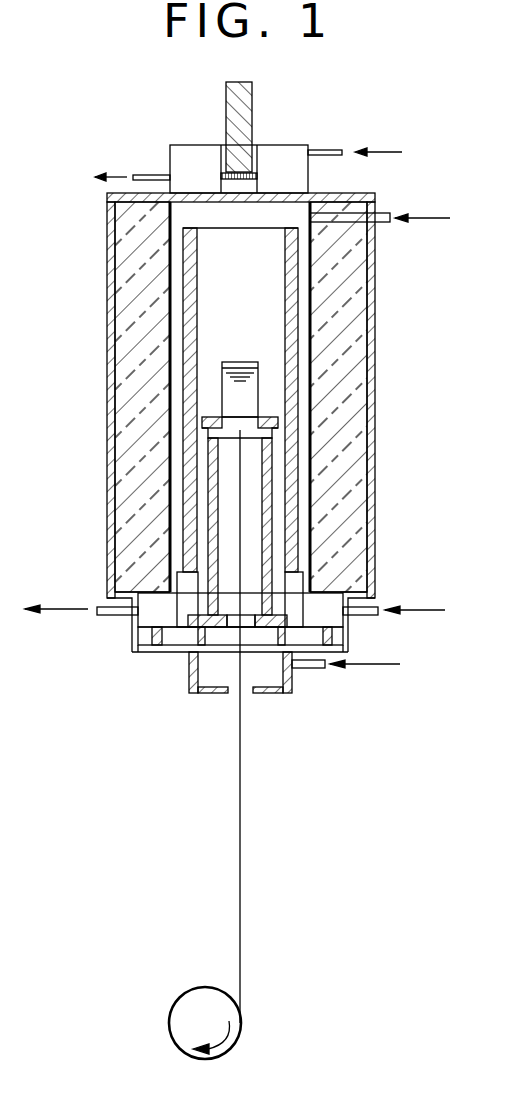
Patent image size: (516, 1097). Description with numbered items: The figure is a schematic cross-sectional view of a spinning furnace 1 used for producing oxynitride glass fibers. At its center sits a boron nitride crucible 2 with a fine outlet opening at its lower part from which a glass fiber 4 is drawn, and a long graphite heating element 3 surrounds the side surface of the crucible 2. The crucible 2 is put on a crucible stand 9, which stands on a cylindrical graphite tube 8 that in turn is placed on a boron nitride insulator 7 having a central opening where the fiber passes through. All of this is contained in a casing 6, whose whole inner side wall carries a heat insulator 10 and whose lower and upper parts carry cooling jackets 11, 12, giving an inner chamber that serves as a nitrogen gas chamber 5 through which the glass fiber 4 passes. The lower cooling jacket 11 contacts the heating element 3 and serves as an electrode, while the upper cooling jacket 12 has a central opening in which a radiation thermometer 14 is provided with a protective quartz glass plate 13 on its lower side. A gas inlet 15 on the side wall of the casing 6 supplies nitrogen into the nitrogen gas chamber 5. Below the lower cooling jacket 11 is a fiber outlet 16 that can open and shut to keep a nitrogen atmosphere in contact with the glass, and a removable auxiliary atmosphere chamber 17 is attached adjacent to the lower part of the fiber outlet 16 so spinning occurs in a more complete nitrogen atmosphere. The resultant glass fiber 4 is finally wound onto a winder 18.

The spinning furnace 1 is at (100, 258).
The boron nitride crucible 2 is at (247, 383).
The graphite heating element 3 is at (290, 287).
The glass fiber 4 is at (238, 782).
The nitrogen gas chamber 5 is at (205, 343).
The casing 6 is at (100, 528).
The boron nitride insulator 7 is at (280, 607).
The cylindrical graphite tube 8 is at (270, 485).
The crucible stand 9 is at (280, 418).
The heat insulator 10 is at (343, 527).
The lower cooling jacket 11 is at (328, 602).
The upper cooling jacket 12 is at (172, 147).
The protective quartz glass plate 13 is at (257, 172).
The radiation thermometer 14 is at (257, 102).
The gas inlet 15 is at (375, 213).
The fiber outlet 16 is at (232, 640).
The auxiliary atmosphere chamber 17 is at (275, 690).
The winder 18 is at (168, 1017).